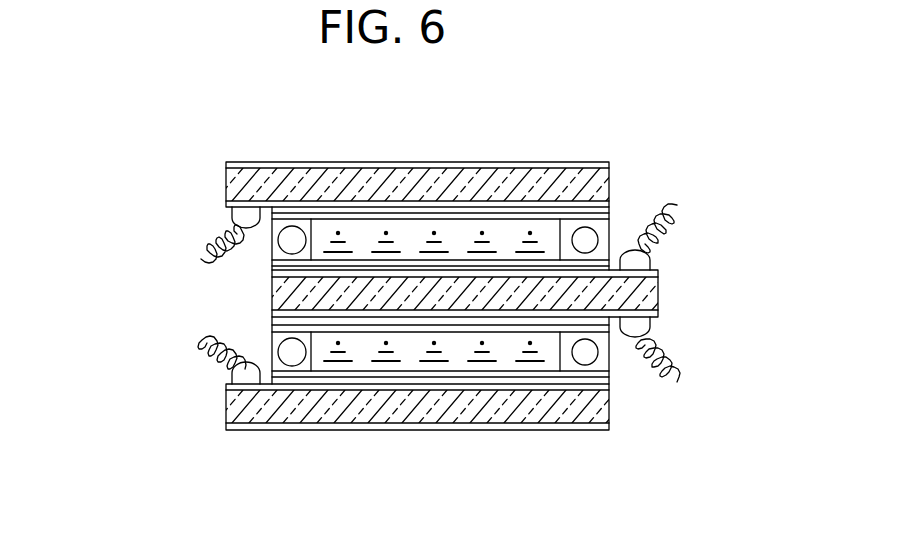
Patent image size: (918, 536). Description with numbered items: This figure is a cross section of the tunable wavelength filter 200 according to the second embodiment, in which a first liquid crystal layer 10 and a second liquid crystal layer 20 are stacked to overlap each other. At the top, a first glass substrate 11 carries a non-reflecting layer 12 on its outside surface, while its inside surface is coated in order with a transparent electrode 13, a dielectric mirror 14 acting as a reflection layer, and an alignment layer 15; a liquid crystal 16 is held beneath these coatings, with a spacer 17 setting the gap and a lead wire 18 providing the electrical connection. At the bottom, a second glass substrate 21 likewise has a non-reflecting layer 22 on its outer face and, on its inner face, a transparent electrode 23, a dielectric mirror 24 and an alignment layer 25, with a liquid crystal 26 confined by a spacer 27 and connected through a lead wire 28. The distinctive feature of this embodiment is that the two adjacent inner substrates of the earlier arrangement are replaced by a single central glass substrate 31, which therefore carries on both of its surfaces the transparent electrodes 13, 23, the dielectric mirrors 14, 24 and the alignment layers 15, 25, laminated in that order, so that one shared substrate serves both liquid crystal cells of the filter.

The tunable wavelength filter 200 is at (244, 154).
The first liquid crystal layer 10 is at (126, 236).
The first glass substrate 11 is at (362, 163).
The non-reflecting layer 12 is at (294, 166).
The transparent electrode 13 is at (425, 205).
The dielectric mirror 14 is at (472, 210).
The alignment layer 15 is at (611, 218).
The liquid crystal 16 is at (508, 233).
The spacer 17 is at (592, 238).
The lead wire 18 is at (212, 240).
The second liquid crystal layer 20 is at (98, 318).
The second glass substrate 21 is at (350, 412).
The non-reflecting layer 22 is at (308, 431).
The transparent electrode 23 is at (272, 320).
The dielectric mirror 24 is at (272, 326).
The alignment layer 25 is at (272, 333).
The liquid crystal 26 is at (412, 348).
The spacer 27 is at (582, 355).
The lead wire 28 is at (210, 365).
The glass substrate 31 is at (659, 290).